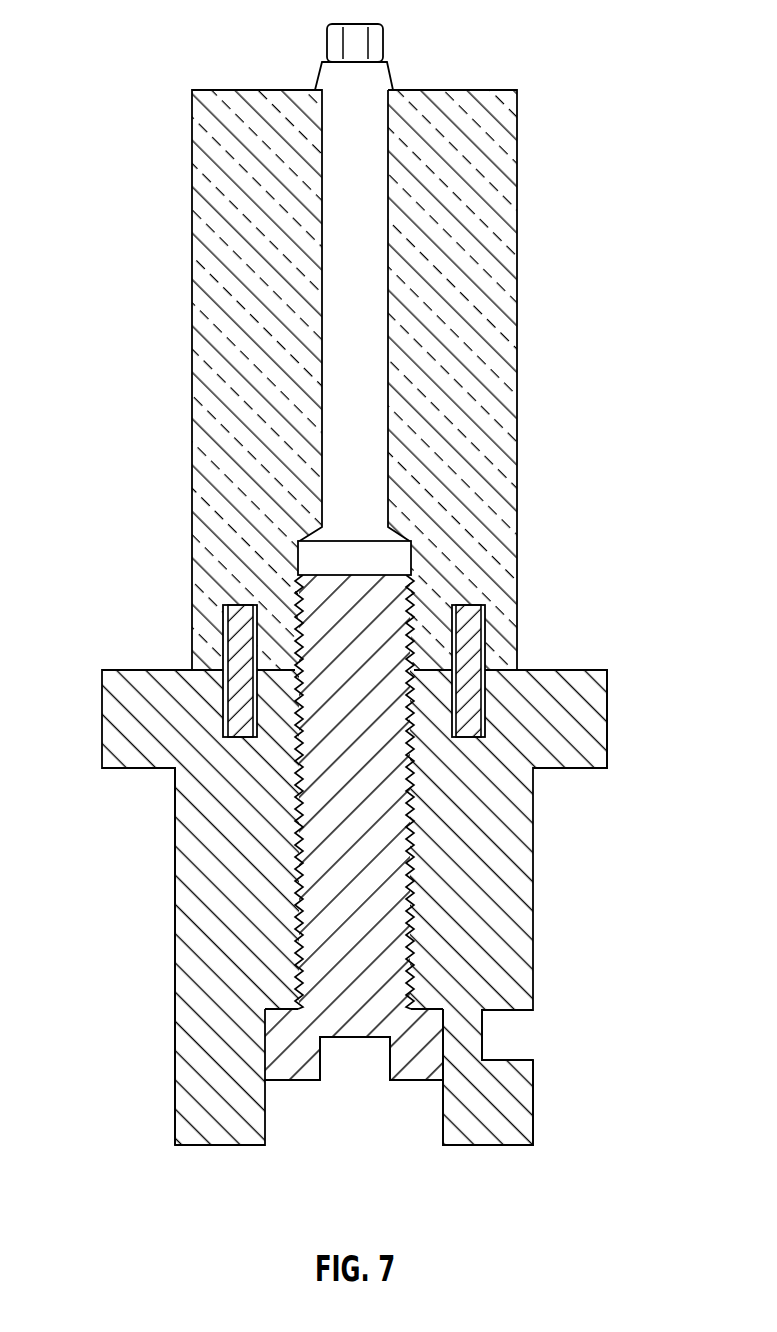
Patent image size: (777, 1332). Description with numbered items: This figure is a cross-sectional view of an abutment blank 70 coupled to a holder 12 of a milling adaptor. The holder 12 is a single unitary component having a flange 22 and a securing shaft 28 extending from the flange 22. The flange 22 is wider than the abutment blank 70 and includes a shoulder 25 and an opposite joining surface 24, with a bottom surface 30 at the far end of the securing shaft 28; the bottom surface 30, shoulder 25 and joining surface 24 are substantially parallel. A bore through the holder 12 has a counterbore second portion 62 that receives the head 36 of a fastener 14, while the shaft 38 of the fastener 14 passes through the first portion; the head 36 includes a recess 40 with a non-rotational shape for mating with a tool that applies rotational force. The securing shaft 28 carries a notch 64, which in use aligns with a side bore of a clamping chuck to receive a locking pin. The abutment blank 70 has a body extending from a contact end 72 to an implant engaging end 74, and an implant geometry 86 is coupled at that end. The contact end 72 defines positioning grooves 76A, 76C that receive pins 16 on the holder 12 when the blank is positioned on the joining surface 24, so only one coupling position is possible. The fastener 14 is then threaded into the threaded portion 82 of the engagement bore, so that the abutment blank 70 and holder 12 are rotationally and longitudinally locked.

The holder 12 is at (388, 666).
The fastener 14 is at (298, 1080).
The pins 16 is at (223, 650).
The flange 22 is at (607, 720).
The joining surface 24 is at (557, 670).
The shoulder 25 is at (152, 768).
The securing shaft 28 is at (175, 915).
The bottom surface 30 is at (225, 1145).
The head 36 is at (443, 1072).
The shaft 38 is at (298, 590).
The recess 40 is at (357, 1070).
The second portion 62 is at (425, 1145).
The notch 64 is at (520, 1035).
The abutment blank 70 is at (388, 666).
The contact end 72 is at (203, 676).
The implant engaging end 74 is at (226, 90).
The positioning groove 76A is at (222, 613).
The positioning groove 76C is at (480, 623).
The threaded portion 82 is at (313, 552).
The implant geometry 86 is at (385, 45).